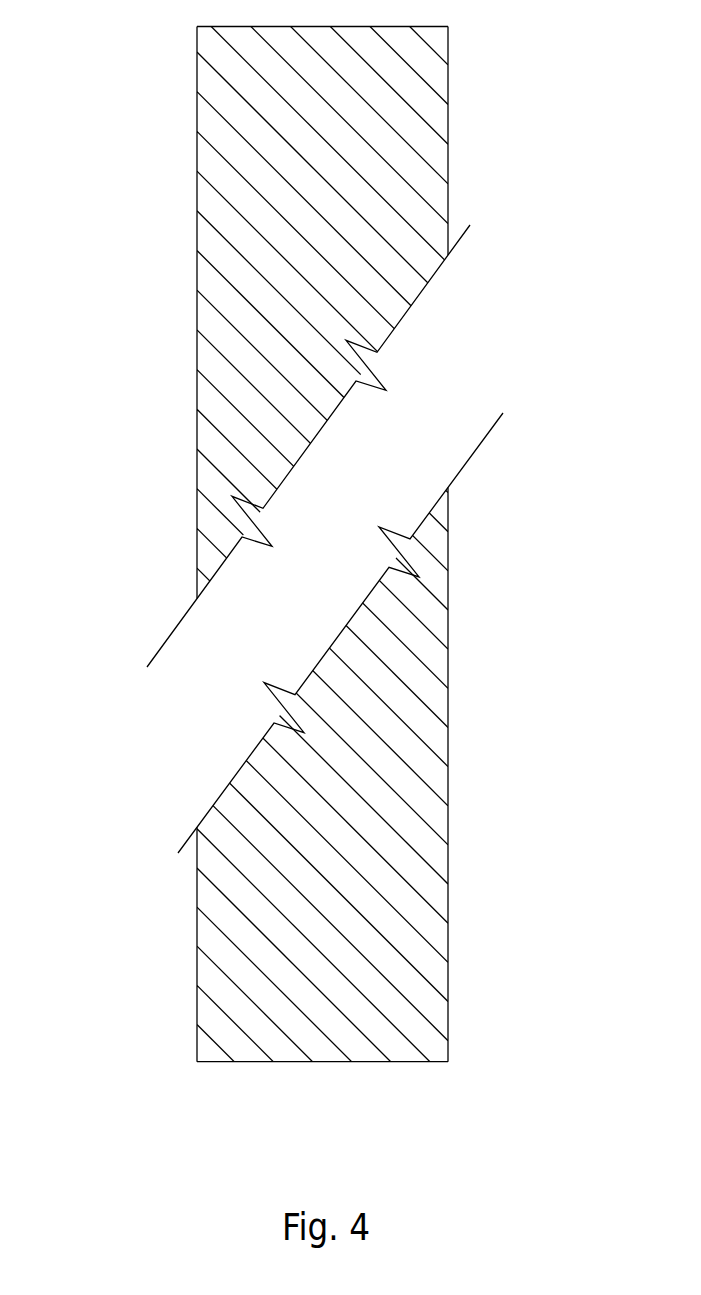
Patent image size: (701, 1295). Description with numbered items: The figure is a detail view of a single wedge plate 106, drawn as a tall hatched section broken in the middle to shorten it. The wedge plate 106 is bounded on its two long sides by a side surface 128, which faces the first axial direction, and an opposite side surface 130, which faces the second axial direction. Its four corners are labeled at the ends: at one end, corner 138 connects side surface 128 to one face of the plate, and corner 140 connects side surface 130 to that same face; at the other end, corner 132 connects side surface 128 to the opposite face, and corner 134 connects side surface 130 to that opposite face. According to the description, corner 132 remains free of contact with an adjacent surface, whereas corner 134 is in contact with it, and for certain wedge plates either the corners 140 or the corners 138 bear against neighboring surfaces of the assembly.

The wedge plate 106 is at (190, 337).
The corner 138 is at (197, 26).
The corner 140 is at (448, 26).
The side surface 130 is at (449, 634).
The side surface 128 is at (197, 881).
The corner 132 is at (197, 1062).
The corner 134 is at (448, 1062).